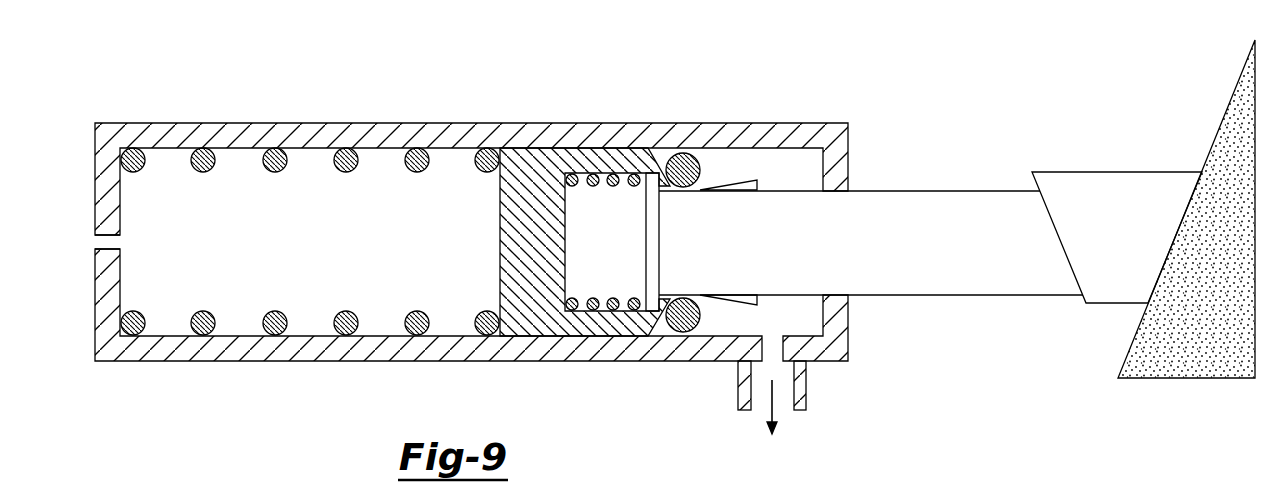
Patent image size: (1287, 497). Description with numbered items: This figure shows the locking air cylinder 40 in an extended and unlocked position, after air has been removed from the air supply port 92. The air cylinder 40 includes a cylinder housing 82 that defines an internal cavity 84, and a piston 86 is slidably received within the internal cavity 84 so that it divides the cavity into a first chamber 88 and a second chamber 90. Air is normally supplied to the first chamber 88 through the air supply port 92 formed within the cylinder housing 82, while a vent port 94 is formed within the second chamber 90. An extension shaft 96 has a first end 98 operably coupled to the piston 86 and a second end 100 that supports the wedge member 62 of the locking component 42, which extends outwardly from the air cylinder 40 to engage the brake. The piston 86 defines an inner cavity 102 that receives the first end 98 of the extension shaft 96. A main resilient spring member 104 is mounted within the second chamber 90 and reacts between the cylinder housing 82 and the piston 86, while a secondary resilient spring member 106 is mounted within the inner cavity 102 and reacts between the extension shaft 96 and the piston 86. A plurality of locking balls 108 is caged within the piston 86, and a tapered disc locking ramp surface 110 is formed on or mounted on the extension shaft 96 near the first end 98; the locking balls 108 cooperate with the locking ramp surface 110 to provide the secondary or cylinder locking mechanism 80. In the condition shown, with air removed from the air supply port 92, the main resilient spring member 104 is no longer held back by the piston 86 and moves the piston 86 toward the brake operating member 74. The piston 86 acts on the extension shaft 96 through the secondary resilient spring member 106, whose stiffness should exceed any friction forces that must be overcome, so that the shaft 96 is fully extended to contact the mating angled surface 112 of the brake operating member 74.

The air cylinder 40 is at (313, 107).
The locking component 42 is at (937, 315).
The wedge member 62 is at (1132, 183).
The brake operating member 74 is at (1186, 363).
The cylinder locking mechanism 80 is at (708, 318).
The cylinder housing 82 is at (367, 347).
The internal cavity 84 is at (248, 305).
The piston 86 is at (545, 160).
The first chamber 88 is at (780, 181).
The second chamber 90 is at (233, 255).
The air supply port 92 is at (781, 400).
The vent port 94 is at (100, 242).
The extension shaft 96 is at (853, 258).
The first end 98 is at (687, 273).
The second end 100 is at (997, 275).
The inner cavity 102 is at (592, 255).
The main resilient spring member 104 is at (418, 174).
The secondary resilient spring member 106 is at (620, 174).
The locking balls 108 is at (683, 158).
The locking ramp surface 110 is at (738, 186).
The angled surface 112 is at (1118, 360).